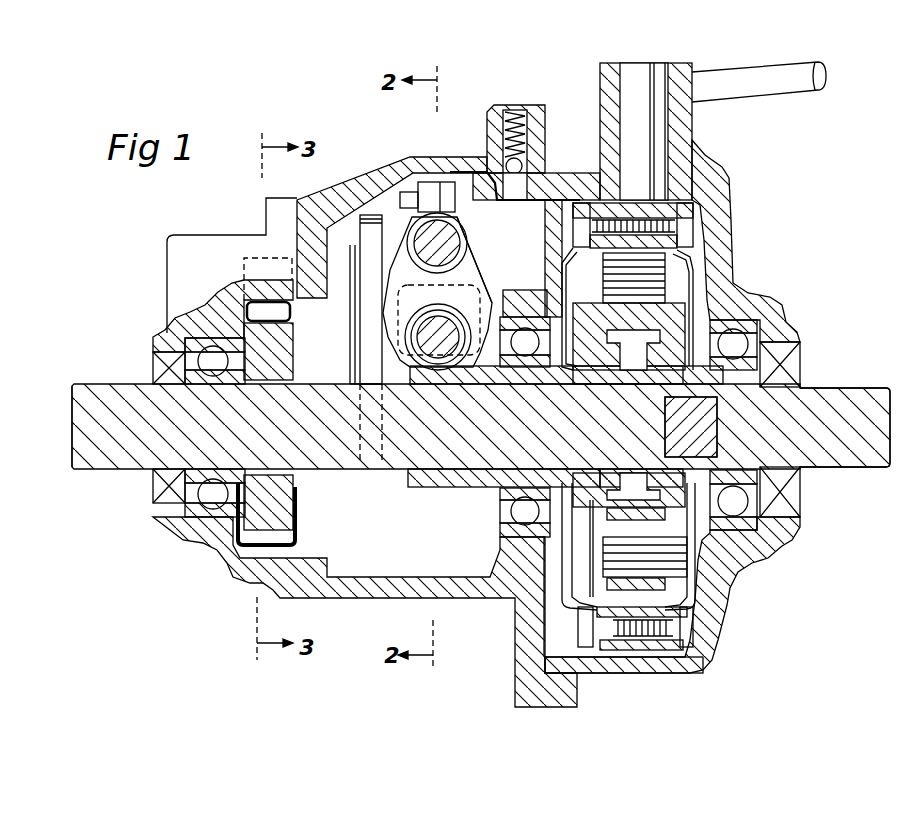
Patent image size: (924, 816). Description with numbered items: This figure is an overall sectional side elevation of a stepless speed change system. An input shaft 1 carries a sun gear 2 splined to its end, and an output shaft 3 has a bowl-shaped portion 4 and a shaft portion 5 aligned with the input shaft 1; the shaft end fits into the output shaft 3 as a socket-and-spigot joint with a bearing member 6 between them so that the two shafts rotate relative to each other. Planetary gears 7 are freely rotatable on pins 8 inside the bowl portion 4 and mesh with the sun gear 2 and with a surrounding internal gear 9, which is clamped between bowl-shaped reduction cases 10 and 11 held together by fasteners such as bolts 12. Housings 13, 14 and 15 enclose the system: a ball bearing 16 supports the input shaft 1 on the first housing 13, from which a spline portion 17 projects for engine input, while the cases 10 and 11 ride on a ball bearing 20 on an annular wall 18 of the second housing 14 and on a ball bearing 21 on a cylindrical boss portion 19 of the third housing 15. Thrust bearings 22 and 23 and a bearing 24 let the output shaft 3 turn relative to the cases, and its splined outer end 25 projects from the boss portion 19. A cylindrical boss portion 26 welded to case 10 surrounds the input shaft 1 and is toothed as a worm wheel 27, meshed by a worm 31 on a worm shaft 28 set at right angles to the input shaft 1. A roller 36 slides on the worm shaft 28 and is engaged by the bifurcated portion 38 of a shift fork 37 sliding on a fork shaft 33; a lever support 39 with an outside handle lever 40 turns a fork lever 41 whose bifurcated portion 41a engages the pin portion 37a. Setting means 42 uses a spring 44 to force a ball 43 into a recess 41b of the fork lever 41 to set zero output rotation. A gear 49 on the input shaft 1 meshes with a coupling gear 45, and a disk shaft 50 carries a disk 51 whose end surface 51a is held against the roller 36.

The input shaft 1 is at (72, 440).
The sun gear 2 is at (636, 383).
The output shaft 3 is at (889, 434).
The bowl-shaped portion 4 is at (680, 318).
The shaft portion 5 is at (825, 466).
The bearing member 6 is at (692, 394).
The planetary gear 7 is at (710, 610).
The pin 8 is at (712, 567).
The internal gear 9 is at (662, 272).
The reduction case 10 is at (562, 265).
The reduction case 11 is at (700, 245).
The bolts 12 is at (705, 647).
The first housing 13 is at (228, 563).
The second housing 14 is at (383, 175).
The third housing 15 is at (722, 190).
The ball bearing 16 is at (187, 524).
The spline portion 17 is at (104, 470).
The annular wall 18 is at (513, 292).
The cylindrical boss portion 19 is at (782, 308).
The ball bearing 20 is at (497, 512).
The ball bearing 21 is at (760, 530).
The thrust bearing 22 is at (575, 468).
The thrust bearing 23 is at (680, 456).
The bearing 24 is at (747, 376).
The spline portion 25 is at (877, 468).
The cylindrical boss portion 26 is at (548, 382).
The worm wheel 27 is at (425, 488).
The worm shaft 28 is at (440, 358).
The worm 31 is at (402, 348).
The fork shaft 33 is at (455, 243).
The roller 36 is at (477, 358).
The shift fork 37 is at (396, 268).
The pin portion 37a is at (425, 182).
The bifurcated portion 38 is at (398, 340).
The lever support 39 is at (690, 148).
The handle lever 40 is at (771, 67).
The fork lever 41 is at (566, 178).
The bifurcated portion 41a is at (468, 190).
The recess 41b is at (520, 200).
The setting means 42 is at (527, 100).
The ball 43 is at (512, 176).
The spring 44 is at (508, 112).
The coupling gear 45 is at (247, 262).
The gear 49 is at (297, 530).
The disk shaft 50 is at (346, 386).
The disk 51 is at (366, 220).
The end surface 51a is at (385, 283).